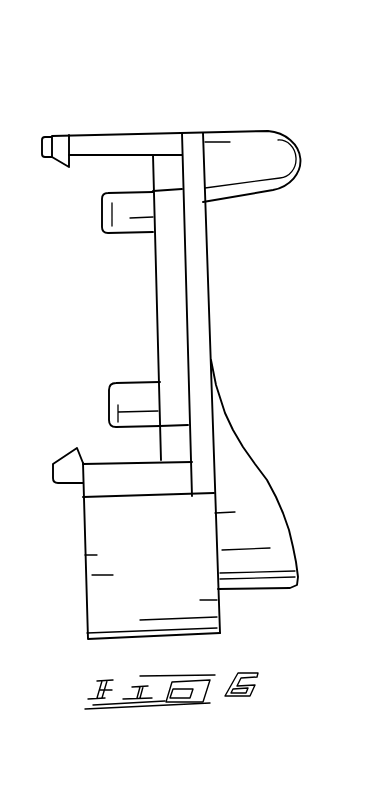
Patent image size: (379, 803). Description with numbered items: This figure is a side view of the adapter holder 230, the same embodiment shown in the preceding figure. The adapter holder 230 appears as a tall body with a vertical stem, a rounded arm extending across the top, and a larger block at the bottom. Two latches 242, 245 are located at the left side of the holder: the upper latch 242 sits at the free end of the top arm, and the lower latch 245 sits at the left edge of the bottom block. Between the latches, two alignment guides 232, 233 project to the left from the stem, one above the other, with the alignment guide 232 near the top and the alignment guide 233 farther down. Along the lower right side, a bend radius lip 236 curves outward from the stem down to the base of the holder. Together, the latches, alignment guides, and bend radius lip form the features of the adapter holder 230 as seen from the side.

The adapter holder 230 is at (322, 130).
The latch 242 is at (63, 148).
The alignment guide 232 is at (137, 222).
The alignment guide 233 is at (140, 402).
The latch 245 is at (68, 467).
The bend radius lip 236 is at (262, 537).